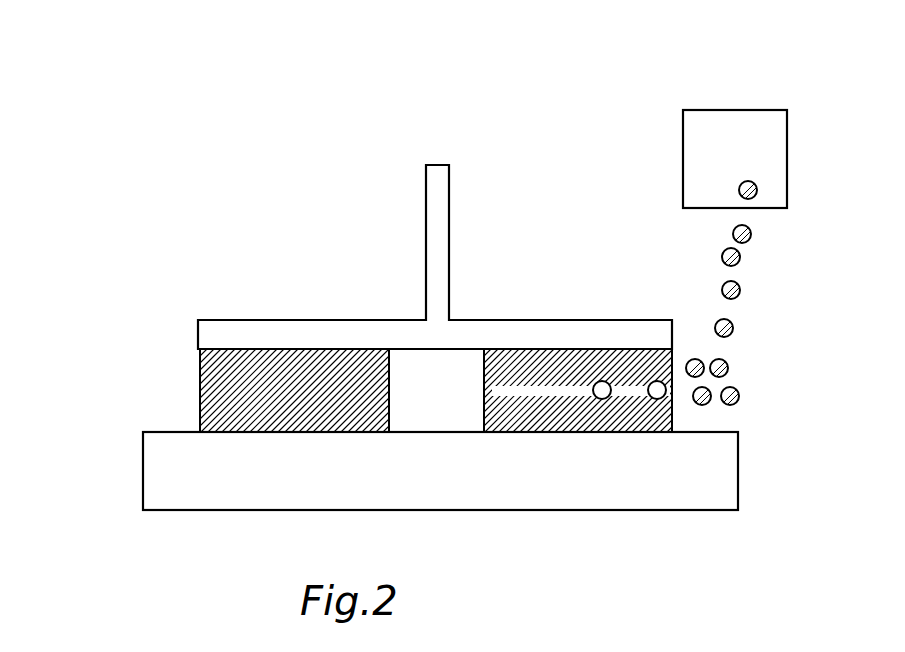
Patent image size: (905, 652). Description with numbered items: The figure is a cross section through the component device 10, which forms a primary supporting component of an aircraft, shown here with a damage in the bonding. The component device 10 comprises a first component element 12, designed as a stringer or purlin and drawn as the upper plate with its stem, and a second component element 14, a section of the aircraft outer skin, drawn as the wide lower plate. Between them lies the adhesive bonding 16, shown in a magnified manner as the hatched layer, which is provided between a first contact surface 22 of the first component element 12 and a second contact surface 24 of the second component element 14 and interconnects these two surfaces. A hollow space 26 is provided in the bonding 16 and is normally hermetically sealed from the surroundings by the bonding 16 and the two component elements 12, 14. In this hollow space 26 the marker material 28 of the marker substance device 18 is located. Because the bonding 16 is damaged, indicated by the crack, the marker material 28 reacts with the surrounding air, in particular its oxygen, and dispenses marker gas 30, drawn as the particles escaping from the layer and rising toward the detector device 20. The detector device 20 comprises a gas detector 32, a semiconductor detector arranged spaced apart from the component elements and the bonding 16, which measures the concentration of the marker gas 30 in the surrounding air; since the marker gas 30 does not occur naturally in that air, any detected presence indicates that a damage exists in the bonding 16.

The component device 10 is at (150, 170).
The first component element 12 is at (228, 328).
The second component element 14 is at (185, 490).
The bonding 16 is at (230, 383).
The marker substance device 18 is at (450, 335).
The detector device 20 is at (678, 122).
The first contact surface 22 is at (222, 355).
The second contact surface 24 is at (217, 425).
The hollow space 26 is at (428, 395).
The marker material 28 is at (415, 352).
The marker gas 30 is at (748, 240).
The gas detector 32 is at (710, 128).